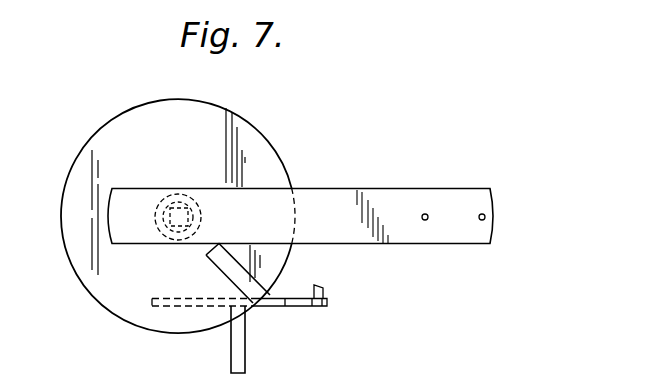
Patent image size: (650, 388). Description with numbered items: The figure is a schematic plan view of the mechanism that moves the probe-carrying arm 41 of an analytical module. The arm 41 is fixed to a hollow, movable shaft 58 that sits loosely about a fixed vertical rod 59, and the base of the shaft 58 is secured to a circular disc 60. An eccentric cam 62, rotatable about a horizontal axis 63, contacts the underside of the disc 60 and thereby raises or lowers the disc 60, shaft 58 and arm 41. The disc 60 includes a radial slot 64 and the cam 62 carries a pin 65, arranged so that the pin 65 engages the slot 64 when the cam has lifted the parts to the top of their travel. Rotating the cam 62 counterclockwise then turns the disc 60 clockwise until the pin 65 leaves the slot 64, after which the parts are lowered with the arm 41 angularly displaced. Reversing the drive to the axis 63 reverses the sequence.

The probe-carrying arm 41 is at (395, 203).
The hollow movable shaft 58 is at (167, 197).
The fixed vertical rod 59 is at (183, 204).
The circular disc 60 is at (100, 153).
The eccentric cam 62 is at (302, 307).
The horizontal axis 63 is at (246, 355).
The radial slot 64 is at (240, 266).
The pin 65 is at (326, 289).